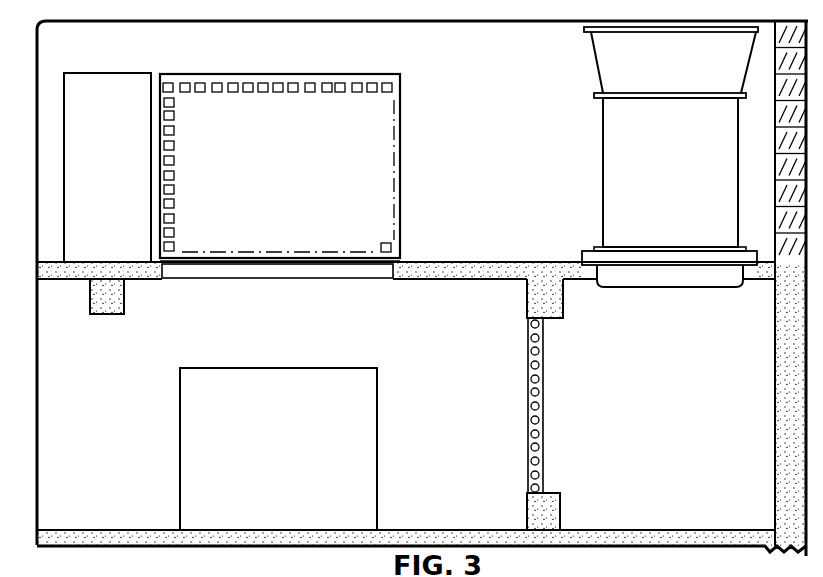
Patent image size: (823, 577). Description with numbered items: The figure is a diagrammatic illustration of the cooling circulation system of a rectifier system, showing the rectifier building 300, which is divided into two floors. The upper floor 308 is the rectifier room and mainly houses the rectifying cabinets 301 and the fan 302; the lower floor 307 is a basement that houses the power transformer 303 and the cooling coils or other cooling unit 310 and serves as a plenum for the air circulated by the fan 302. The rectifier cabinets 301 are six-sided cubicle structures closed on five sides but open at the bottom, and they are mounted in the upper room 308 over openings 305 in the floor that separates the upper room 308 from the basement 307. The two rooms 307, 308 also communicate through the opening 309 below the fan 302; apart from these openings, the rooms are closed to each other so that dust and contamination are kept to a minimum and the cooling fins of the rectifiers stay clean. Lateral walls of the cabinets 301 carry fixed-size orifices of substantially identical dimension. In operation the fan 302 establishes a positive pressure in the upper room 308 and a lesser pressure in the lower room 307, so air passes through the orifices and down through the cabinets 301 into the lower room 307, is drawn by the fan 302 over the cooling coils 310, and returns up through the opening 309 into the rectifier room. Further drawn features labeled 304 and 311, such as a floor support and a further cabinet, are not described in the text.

The rectifier building 300 is at (482, 249).
The rectifying cabinets 301 is at (280, 167).
The fan 302 is at (670, 146).
The power transformer 303 is at (278, 449).
The floor support pillar 304 is at (78, 279).
The openings 305 is at (285, 279).
The lower floor 307 is at (775, 410).
The upper floor 308 is at (775, 182).
The opening 309 is at (680, 287).
The cooling coils 310 is at (543, 389).
The cabinet 311 is at (107, 167).